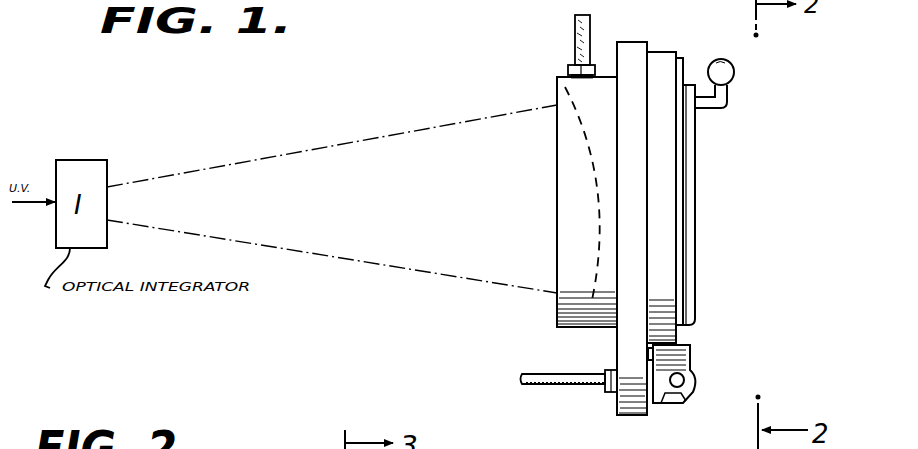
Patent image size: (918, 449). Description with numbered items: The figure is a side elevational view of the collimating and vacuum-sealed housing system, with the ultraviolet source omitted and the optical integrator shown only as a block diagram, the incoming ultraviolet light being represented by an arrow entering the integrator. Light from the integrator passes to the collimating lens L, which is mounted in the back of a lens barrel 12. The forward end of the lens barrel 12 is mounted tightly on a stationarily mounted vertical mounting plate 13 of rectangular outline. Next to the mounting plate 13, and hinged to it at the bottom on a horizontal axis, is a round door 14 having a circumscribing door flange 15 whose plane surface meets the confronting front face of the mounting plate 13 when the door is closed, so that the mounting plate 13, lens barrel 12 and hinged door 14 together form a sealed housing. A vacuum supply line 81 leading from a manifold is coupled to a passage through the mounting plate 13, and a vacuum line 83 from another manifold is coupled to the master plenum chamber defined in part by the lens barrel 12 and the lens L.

The lens barrel 12 is at (590, 328).
The mounting plate 13 is at (637, 405).
The round door 14 is at (681, 50).
The door flange 15 is at (660, 62).
The vacuum supply line 81 is at (567, 390).
The vacuum line 83 is at (574, 40).
The collimating lens L is at (570, 173).